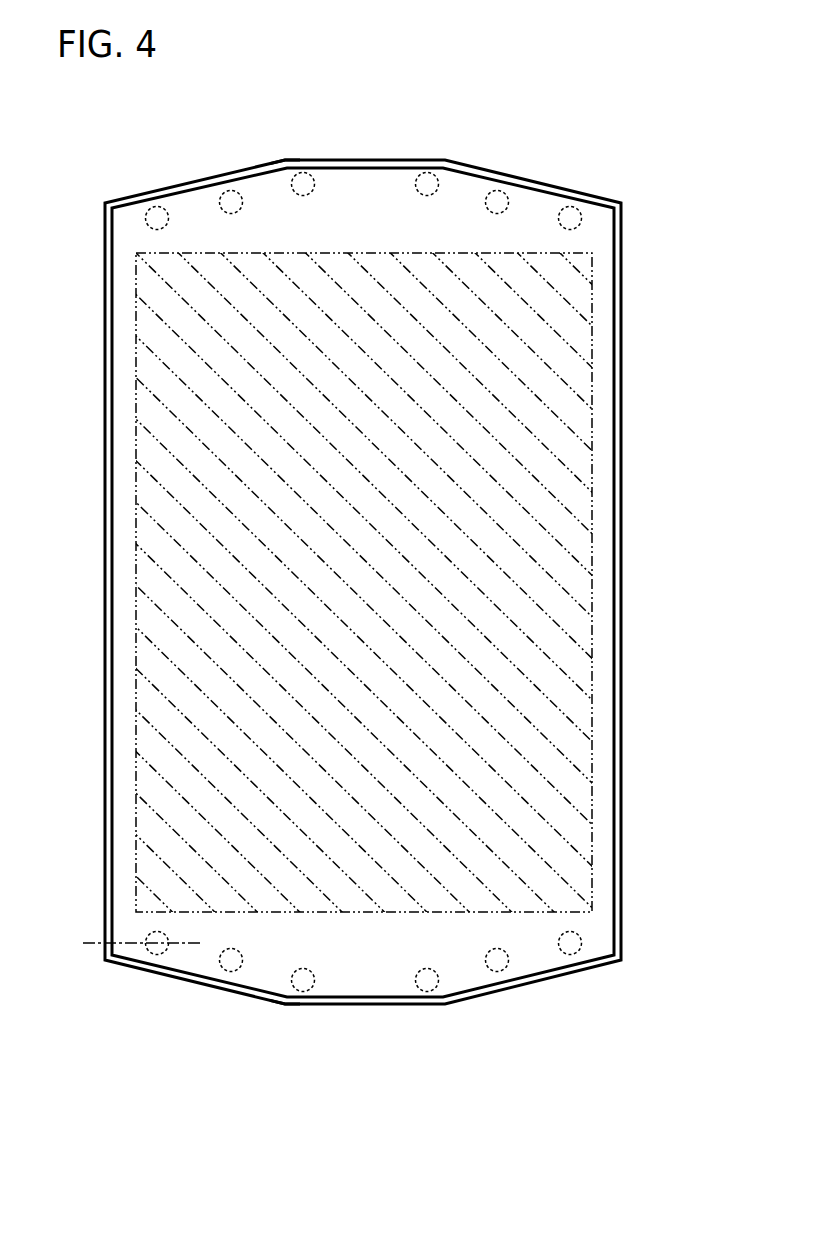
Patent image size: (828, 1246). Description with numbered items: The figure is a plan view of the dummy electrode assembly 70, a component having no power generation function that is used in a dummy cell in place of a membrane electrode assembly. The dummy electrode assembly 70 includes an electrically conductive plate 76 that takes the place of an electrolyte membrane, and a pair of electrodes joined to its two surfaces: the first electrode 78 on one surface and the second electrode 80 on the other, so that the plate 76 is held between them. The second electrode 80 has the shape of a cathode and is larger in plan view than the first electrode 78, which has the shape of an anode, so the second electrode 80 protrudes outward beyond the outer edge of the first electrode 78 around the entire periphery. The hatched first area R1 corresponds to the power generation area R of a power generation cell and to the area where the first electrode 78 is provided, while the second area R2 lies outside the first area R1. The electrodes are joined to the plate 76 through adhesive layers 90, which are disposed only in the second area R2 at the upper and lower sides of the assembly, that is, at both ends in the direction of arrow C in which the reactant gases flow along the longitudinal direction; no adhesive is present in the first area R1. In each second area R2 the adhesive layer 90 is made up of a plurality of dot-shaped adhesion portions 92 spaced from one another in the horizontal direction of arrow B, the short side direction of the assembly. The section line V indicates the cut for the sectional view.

The dummy electrode assembly 70 is at (99, 102).
The plate 76 is at (105, 369).
The first electrode 78 is at (113, 421).
The second electrode 80 is at (122, 467).
The adhesive layer 90 is at (283, 165).
The dot-shaped adhesion portion 92 is at (226, 199).
The power generation area R is at (545, 388).
The first area R1 is at (575, 458).
The second area R2 is at (463, 197).
The arrow C is at (668, 538).
The arrow B is at (408, 1122).
The section line V- V is at (88, 947).